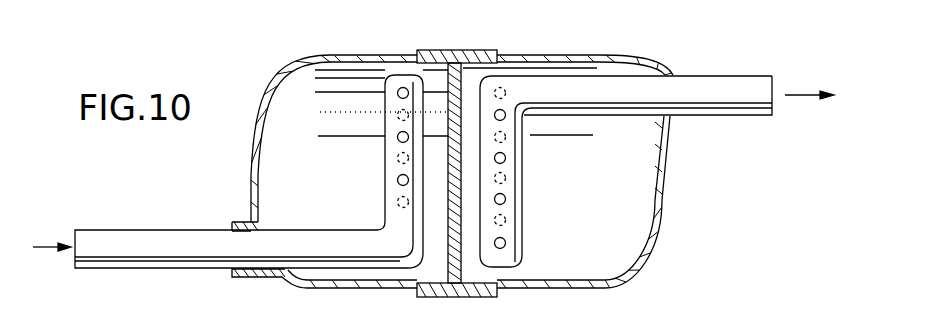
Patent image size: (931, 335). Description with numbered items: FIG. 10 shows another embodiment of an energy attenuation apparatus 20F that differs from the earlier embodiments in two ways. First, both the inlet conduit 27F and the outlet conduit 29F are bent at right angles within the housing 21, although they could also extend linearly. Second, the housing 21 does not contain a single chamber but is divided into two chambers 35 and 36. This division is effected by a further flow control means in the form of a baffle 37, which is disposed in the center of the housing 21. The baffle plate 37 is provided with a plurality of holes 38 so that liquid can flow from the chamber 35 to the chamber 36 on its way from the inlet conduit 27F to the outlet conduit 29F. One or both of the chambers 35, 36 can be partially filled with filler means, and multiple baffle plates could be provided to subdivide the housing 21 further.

The energy attenuation apparatus 20F is at (688, 238).
The housing 21 is at (663, 162).
The inlet conduit 27F is at (163, 238).
The outlet conduit 29F is at (723, 76).
The chamber 35 is at (335, 196).
The chamber 36 is at (597, 192).
The baffle plate 37 is at (458, 96).
The holes 38 is at (458, 147).